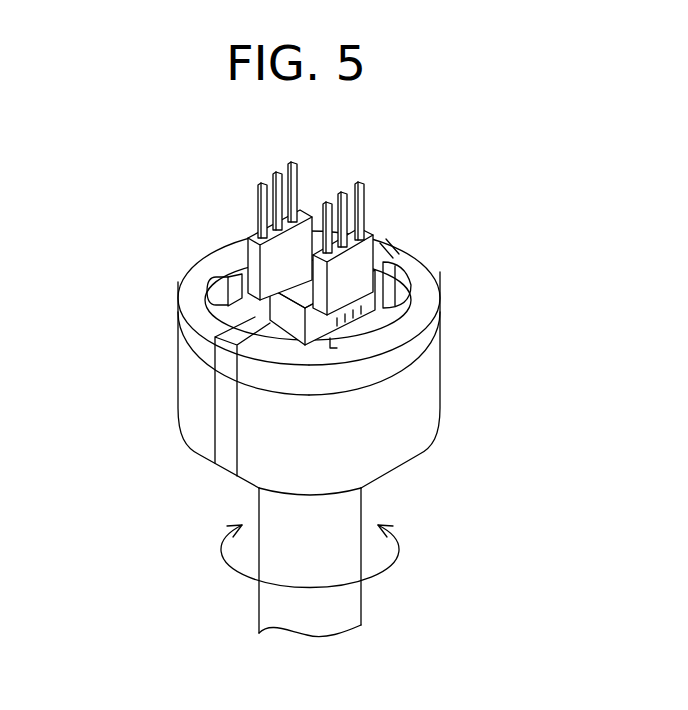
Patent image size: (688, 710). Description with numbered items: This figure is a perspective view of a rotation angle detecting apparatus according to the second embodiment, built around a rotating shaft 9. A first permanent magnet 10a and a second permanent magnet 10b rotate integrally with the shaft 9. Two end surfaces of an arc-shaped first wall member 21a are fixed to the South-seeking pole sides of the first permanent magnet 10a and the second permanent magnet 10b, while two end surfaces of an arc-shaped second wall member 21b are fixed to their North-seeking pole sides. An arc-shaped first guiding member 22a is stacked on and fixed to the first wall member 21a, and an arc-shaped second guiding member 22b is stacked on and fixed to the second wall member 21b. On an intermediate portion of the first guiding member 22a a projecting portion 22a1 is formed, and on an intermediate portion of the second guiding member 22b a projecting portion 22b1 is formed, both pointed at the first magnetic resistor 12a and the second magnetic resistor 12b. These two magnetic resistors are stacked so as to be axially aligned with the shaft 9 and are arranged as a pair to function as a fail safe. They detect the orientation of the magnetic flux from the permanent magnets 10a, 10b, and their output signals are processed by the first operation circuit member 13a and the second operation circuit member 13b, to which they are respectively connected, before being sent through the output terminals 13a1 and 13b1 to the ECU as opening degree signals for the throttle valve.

The shaft 9 is at (352, 604).
The first permanent magnet 10a is at (231, 442).
The second permanent magnet 10b is at (392, 258).
The first magnetic resistor 12a is at (290, 290).
The second magnetic resistor 12b is at (282, 328).
The first operation circuit member 13a is at (352, 272).
The output terminal 13a1 is at (365, 195).
The second operation circuit member 13b is at (285, 247).
The output terminal 13b1 is at (277, 172).
The first wall member 21a is at (412, 403).
The second wall member 21b is at (193, 400).
The first guiding member 22a is at (410, 352).
The projecting portion 22a1 is at (395, 330).
The second guiding member 22b is at (195, 282).
The projecting portion 22b1 is at (236, 278).